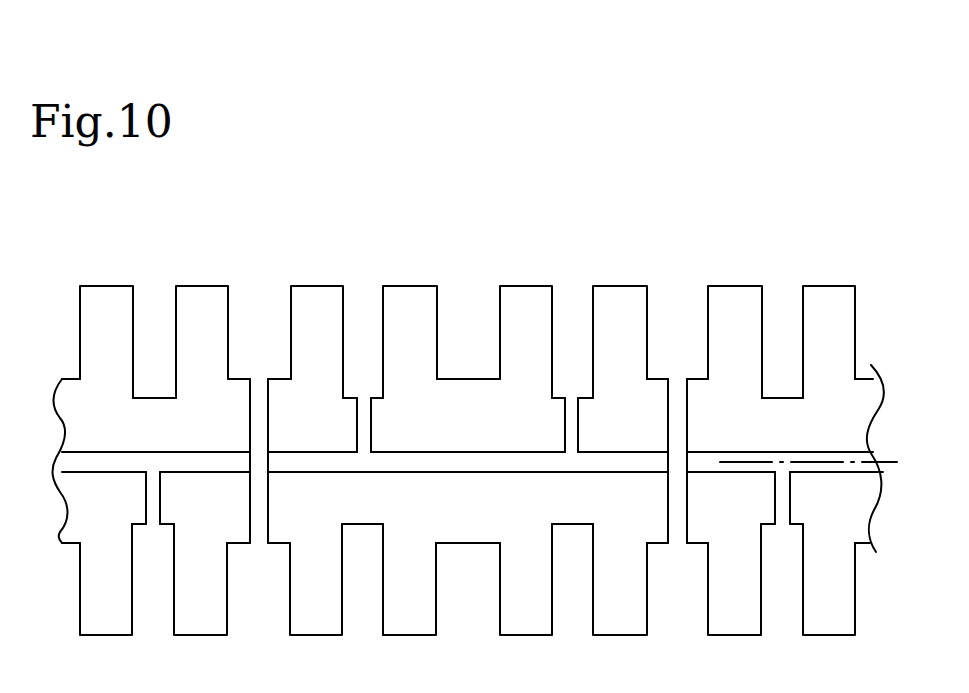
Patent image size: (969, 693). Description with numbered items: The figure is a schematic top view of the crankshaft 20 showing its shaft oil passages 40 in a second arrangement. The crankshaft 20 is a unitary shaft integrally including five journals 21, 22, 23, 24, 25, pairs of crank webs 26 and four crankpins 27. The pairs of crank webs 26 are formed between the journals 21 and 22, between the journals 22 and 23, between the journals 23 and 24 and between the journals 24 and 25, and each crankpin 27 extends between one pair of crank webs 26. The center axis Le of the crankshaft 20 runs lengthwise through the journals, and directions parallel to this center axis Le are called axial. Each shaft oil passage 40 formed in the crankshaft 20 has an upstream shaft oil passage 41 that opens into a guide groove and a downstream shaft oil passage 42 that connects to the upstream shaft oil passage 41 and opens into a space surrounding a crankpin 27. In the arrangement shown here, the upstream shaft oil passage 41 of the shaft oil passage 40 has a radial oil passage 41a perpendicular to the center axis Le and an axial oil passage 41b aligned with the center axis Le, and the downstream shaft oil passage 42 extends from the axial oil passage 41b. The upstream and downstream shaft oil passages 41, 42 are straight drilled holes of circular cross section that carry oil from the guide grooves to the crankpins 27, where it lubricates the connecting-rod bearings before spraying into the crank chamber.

The crankshaft 20 is at (580, 246).
The journal 21 is at (860, 546).
The journal 22 is at (692, 547).
The journal 23 is at (477, 544).
The journal 24 is at (274, 546).
The journal 25 is at (58, 555).
The crank web 26 is at (417, 287).
The crankpin 27 is at (148, 398).
The shaft oil passage 40 is at (714, 437).
The upstream shaft oil passage 41 is at (617, 480).
The radial oil passage 41a is at (260, 430).
The axial oil passage 41b is at (660, 460).
The downstream shaft oil passage 42 is at (364, 430).
The center axis Le is at (865, 463).